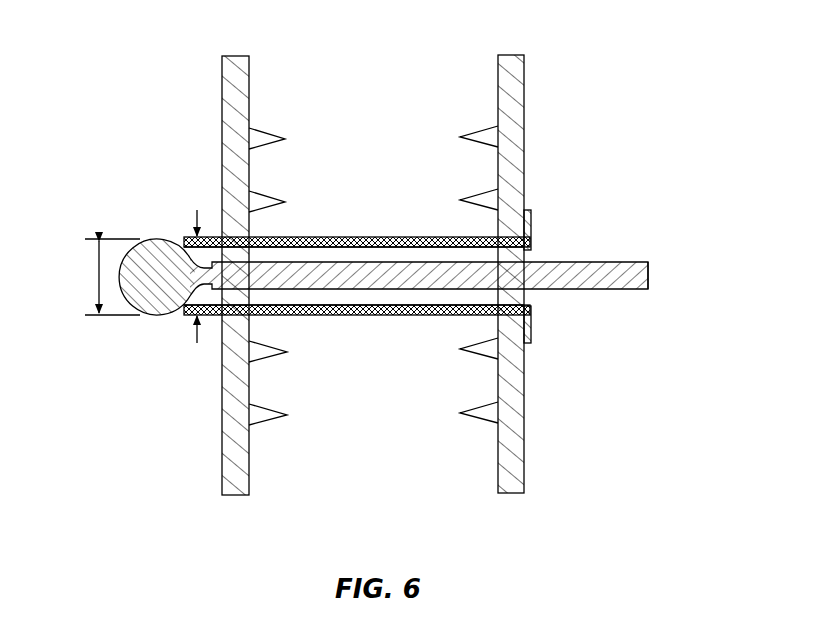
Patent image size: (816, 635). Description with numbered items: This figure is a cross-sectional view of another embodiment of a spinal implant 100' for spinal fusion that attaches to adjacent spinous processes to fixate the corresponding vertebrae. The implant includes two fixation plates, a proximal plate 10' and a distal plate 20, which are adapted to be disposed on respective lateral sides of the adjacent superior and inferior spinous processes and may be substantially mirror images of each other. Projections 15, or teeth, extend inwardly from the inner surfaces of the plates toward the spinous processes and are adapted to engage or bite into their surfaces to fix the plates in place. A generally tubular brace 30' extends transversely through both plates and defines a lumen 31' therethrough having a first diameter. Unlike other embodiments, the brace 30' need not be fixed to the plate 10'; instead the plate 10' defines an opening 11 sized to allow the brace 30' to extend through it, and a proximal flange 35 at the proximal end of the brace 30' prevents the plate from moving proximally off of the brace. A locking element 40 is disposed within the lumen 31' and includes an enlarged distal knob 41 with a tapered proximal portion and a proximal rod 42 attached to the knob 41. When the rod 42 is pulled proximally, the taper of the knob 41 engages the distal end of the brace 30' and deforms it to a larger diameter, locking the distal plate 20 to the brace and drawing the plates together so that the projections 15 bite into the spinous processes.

The spinal implant 100' is at (82, 52).
The proximal plate 10' is at (550, 269).
The distal plate 20 is at (238, 462).
The projections 15 is at (253, 130).
The opening 11 is at (497, 238).
The proximal flange 35 is at (528, 330).
The brace 30' is at (357, 317).
The lumen 31' is at (354, 315).
The locking element 40 is at (357, 277).
The enlarged distal knob 41 is at (160, 310).
The proximal rod 42 is at (610, 290).